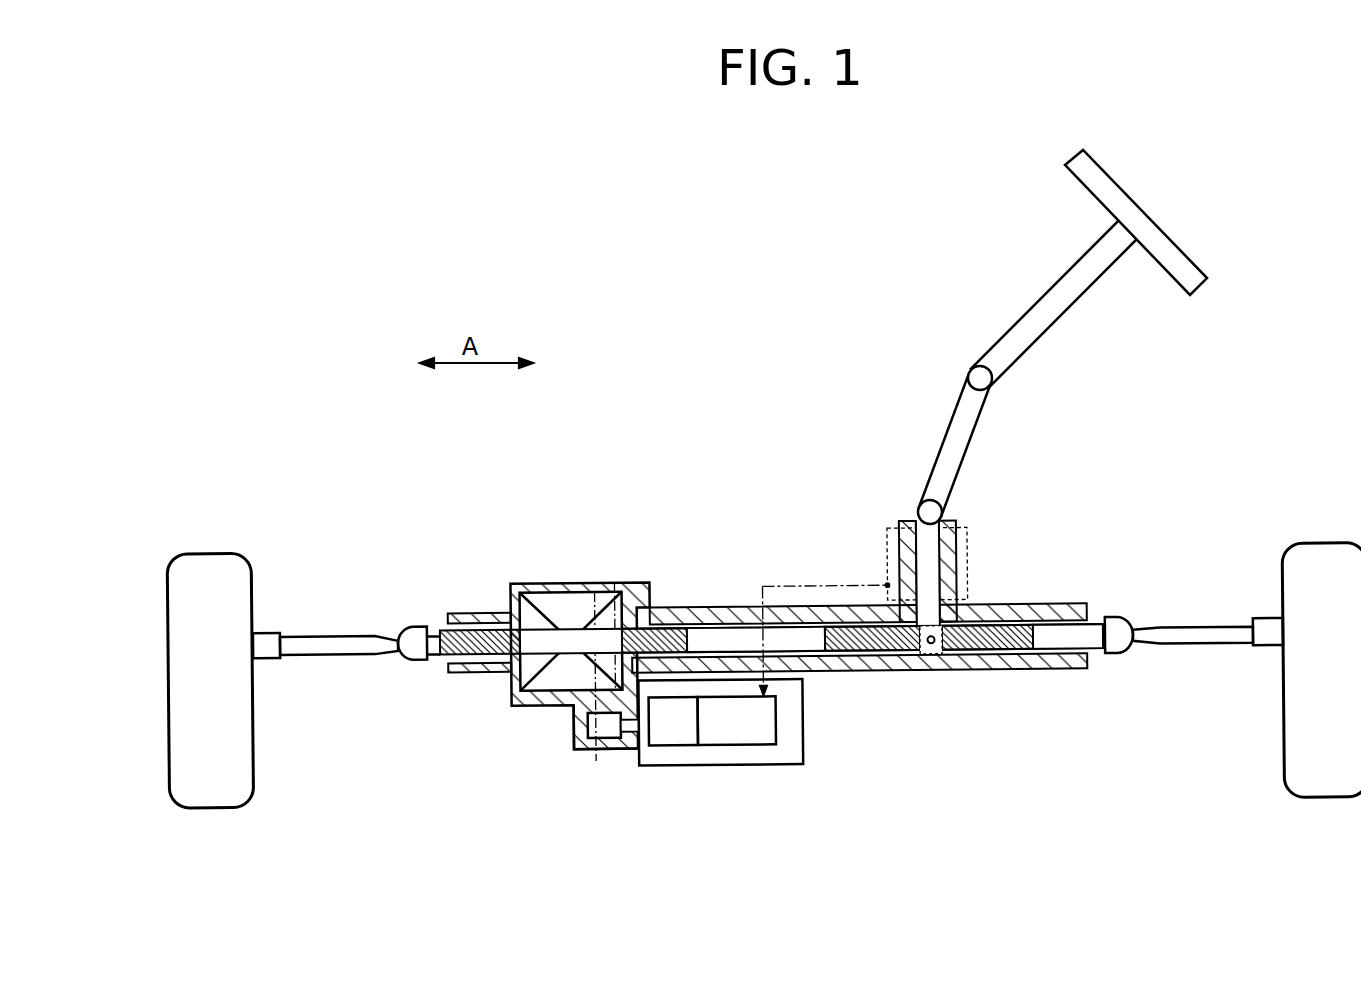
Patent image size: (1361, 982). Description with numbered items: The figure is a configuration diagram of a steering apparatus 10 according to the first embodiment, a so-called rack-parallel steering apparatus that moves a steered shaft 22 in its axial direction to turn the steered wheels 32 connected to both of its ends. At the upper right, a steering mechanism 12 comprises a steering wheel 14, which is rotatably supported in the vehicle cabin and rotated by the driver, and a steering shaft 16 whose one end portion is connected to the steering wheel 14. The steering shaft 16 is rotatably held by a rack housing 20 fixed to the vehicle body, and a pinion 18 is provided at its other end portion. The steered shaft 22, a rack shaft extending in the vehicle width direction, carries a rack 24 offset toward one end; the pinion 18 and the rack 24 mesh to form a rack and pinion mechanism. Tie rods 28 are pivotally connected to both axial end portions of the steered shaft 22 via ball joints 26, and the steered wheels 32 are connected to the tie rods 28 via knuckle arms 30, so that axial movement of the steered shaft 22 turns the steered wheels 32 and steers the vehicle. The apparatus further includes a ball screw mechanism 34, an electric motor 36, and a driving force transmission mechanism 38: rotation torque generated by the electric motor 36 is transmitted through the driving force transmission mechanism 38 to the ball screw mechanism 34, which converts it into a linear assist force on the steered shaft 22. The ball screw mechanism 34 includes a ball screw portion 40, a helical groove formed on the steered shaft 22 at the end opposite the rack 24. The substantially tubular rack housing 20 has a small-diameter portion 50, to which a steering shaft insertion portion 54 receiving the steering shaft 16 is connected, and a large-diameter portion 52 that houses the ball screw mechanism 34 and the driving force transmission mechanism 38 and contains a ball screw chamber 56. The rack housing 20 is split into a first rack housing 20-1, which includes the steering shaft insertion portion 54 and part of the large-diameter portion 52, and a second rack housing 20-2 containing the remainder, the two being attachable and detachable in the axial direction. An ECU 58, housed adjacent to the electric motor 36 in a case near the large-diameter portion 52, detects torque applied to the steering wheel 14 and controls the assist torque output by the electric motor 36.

The steering apparatus 10 is at (769, 566).
The steering mechanism 12 is at (998, 315).
The steering wheel 14 is at (1169, 242).
The steering shaft 16 is at (931, 555).
The pinion 18 is at (931, 659).
The rack housing 20 is at (619, 576).
The first rack housing 20-1 is at (717, 608).
The second rack housing 20-2 is at (485, 610).
The steered shaft 22 is at (1058, 643).
The rack 24 is at (878, 654).
The ball joints 26 is at (420, 659).
The tie rods 28 is at (342, 657).
The knuckle arms 30 is at (273, 652).
The steered wheels 32 is at (206, 567).
The ball screw mechanism 34 is at (539, 700).
The electric motor 36 is at (674, 746).
The driving force transmission mechanism 38 is at (601, 747).
The ball screw portion 40 is at (664, 617).
The small-diameter portion 50 is at (700, 607).
The large-diameter portion 52 is at (543, 588).
The steering shaft insertion portion 54 is at (956, 580).
The ball screw chamber 56 is at (637, 594).
The ECU 58 is at (736, 746).